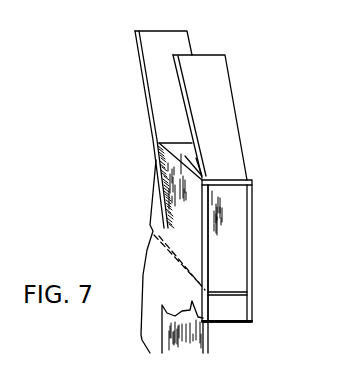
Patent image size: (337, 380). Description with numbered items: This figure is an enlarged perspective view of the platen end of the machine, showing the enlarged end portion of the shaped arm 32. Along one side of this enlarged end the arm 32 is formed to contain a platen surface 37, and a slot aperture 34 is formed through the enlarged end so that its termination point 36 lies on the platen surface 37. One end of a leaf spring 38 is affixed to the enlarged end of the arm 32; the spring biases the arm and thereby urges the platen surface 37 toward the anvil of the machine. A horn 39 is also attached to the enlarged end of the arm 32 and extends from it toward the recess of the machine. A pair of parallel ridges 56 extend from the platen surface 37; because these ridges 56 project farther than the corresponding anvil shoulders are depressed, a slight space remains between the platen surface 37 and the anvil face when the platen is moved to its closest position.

The shaped arm 32 is at (148, 313).
The slot aperture 34 is at (235, 294).
The termination point of the aperture 36 is at (239, 292).
The platen surface 37 is at (238, 223).
The leaf spring 38 is at (152, 79).
The horn 39 is at (225, 100).
The parallel ridges 56 is at (251, 197).